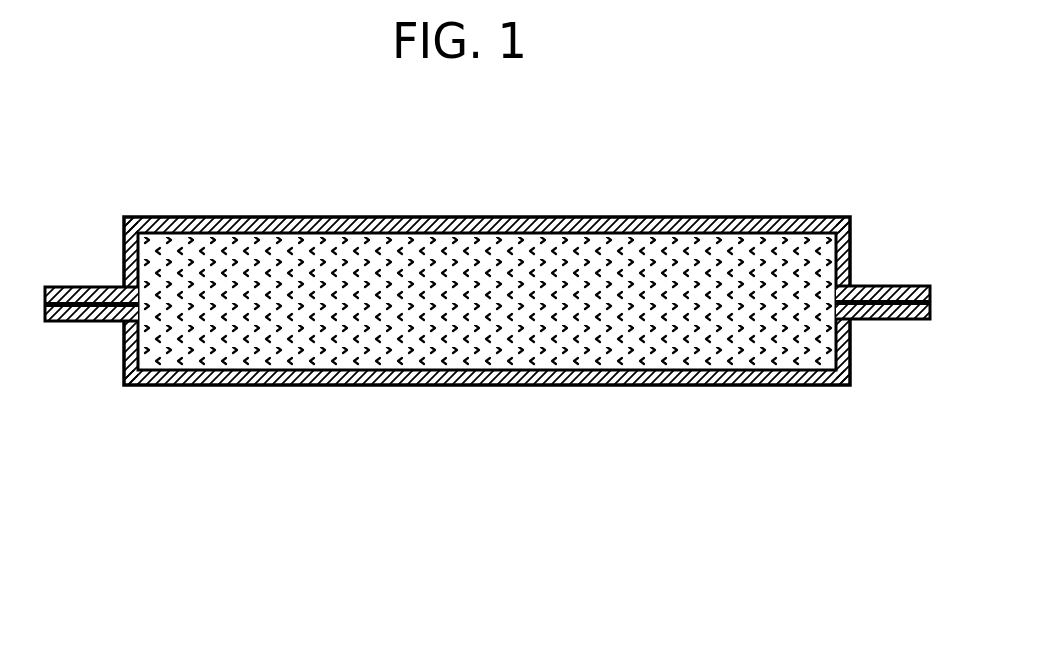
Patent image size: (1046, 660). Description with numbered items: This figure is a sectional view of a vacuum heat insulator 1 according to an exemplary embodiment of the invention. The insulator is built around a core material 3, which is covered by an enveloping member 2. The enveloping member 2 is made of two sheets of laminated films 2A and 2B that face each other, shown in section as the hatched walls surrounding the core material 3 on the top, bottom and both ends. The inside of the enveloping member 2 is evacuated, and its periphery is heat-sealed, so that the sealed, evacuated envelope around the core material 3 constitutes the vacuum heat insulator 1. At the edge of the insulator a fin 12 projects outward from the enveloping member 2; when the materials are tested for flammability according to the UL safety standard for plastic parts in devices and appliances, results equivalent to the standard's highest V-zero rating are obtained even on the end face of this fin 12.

The vacuum heat insulator 1 is at (382, 202).
The enveloping member 2 is at (755, 217).
The laminated film 2A is at (847, 250).
The laminated film 2B is at (848, 347).
The core material 3 is at (545, 322).
The fin 12 is at (82, 285).